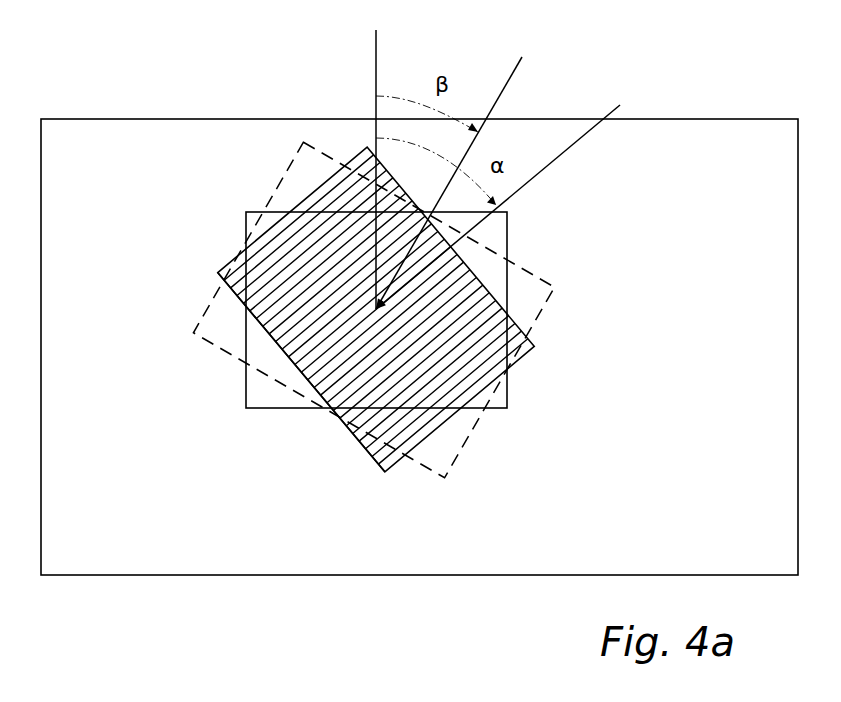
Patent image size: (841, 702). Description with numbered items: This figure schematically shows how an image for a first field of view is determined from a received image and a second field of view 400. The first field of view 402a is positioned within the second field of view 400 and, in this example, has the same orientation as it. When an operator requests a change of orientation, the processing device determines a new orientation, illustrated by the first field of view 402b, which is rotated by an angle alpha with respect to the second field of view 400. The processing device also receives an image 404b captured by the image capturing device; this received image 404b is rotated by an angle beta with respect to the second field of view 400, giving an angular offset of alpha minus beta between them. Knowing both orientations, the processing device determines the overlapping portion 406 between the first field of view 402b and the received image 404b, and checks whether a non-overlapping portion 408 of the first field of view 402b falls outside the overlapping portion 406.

The second field of view 400 is at (625, 118).
The first field of view 402a is at (255, 213).
The first field of view 402b is at (355, 438).
The received image 404b is at (555, 285).
The overlapping portion 406 is at (333, 363).
The non-overlapping portion 408 is at (392, 455).